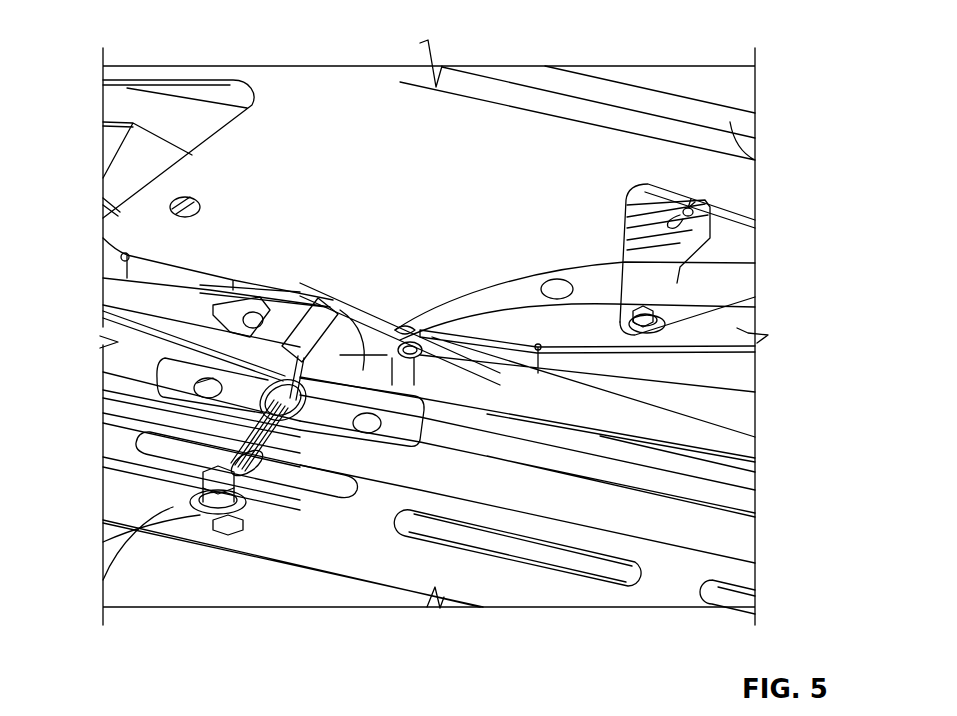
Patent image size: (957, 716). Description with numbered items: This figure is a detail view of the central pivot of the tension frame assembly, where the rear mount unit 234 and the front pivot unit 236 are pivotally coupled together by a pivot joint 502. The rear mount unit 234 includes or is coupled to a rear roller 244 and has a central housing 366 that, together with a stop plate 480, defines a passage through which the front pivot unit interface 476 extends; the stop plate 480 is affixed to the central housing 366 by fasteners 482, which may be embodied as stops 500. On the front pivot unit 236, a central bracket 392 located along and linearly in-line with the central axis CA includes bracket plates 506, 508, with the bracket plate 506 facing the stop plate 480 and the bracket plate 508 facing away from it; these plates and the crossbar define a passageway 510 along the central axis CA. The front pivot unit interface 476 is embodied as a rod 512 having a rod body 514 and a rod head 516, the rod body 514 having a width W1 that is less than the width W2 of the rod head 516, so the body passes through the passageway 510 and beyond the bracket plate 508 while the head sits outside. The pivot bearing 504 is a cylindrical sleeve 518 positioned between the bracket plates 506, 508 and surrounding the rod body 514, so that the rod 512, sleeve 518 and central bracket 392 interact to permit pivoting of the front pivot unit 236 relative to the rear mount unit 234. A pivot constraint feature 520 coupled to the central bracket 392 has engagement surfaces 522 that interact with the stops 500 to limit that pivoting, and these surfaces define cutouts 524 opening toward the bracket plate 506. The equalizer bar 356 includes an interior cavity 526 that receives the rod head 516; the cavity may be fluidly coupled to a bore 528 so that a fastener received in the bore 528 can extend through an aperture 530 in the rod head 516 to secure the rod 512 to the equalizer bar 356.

The central housing 366 is at (232, 163).
The pivot bearing 504 is at (333, 335).
The pivot joint 502 is at (402, 322).
The stop plate 480 is at (403, 322).
The rear roller 244 is at (757, 160).
The bracket plate 506 is at (755, 263).
The stops 500 is at (755, 307).
The rear mount unit 234 is at (760, 335).
The engagement surfaces 522 is at (755, 417).
The pivot constraint feature 520 is at (647, 423).
The front pivot unit 236 is at (727, 500).
The equalizer bar 356 is at (685, 577).
The cutouts 524 is at (418, 380).
The fasteners 482 is at (414, 385).
The bracket plate 508 is at (325, 470).
The cylindrical sleeve 518 is at (330, 345).
The central bracket 392 is at (240, 500).
The passageway 510 is at (260, 470).
The central axis CA is at (245, 555).
The rod head 516 is at (230, 525).
The aperture 530 is at (185, 510).
The bore 528 is at (210, 522).
The rod 512 is at (205, 500).
The interior cavity 526 is at (210, 495).
The front pivot unit interface 476 is at (215, 478).
The width of rod head W2 is at (240, 450).
The rod body 514 is at (200, 400).
The width of rod body W1 is at (340, 312).